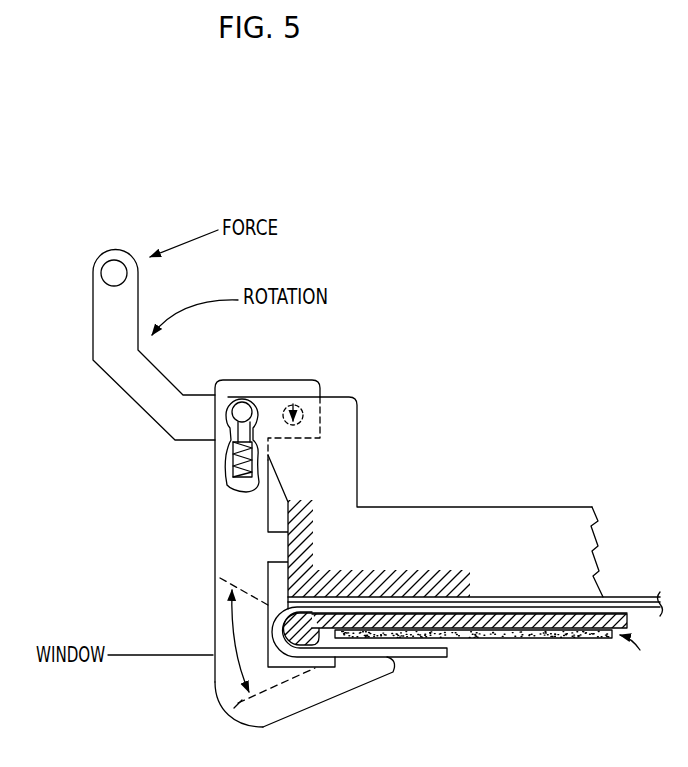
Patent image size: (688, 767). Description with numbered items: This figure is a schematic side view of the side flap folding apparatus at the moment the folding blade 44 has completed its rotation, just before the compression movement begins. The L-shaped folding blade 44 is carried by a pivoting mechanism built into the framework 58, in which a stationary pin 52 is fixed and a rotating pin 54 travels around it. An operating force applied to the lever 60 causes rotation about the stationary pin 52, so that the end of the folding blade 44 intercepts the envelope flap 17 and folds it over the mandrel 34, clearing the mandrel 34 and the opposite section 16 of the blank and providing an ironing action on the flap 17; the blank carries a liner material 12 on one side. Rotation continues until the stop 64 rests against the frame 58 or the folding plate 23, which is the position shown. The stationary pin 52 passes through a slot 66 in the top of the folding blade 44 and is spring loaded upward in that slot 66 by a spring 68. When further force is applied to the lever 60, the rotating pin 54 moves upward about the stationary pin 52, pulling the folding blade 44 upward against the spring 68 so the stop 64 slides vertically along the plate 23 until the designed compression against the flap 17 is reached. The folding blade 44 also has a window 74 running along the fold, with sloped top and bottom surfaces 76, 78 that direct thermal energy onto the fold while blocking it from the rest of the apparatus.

The liner material 12 is at (637, 622).
The section 16 is at (565, 637).
The flap 17 is at (447, 660).
The folding plate 23 is at (450, 507).
The mandrel 34 is at (510, 628).
The folding blade 44 is at (352, 695).
The stationary pin 52 is at (250, 400).
The rotating pin 54 is at (306, 413).
The framework 58 is at (360, 448).
The lever 60 is at (93, 339).
The stop 64 is at (288, 548).
The slot 66 is at (233, 452).
The spring 68 is at (238, 470).
The window 74 is at (213, 632).
The sloped top surface 76 is at (215, 597).
The sloped bottom surface 78 is at (213, 690).